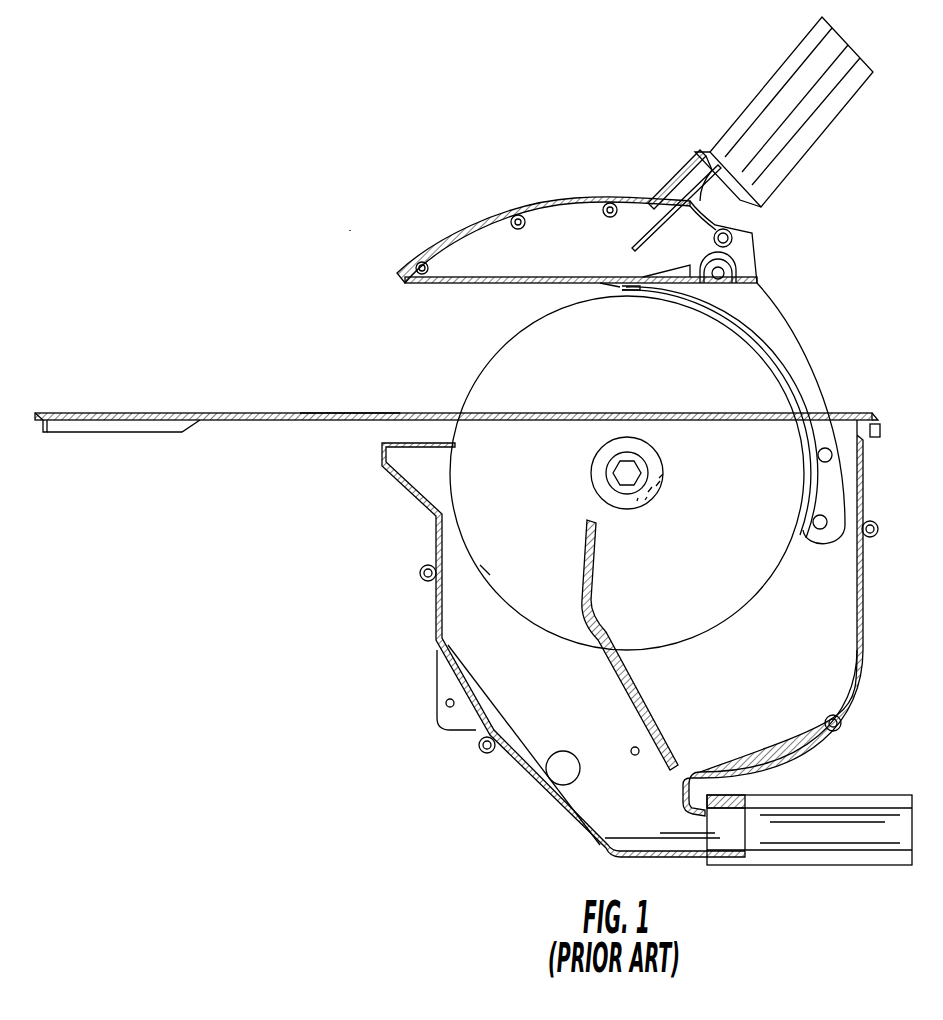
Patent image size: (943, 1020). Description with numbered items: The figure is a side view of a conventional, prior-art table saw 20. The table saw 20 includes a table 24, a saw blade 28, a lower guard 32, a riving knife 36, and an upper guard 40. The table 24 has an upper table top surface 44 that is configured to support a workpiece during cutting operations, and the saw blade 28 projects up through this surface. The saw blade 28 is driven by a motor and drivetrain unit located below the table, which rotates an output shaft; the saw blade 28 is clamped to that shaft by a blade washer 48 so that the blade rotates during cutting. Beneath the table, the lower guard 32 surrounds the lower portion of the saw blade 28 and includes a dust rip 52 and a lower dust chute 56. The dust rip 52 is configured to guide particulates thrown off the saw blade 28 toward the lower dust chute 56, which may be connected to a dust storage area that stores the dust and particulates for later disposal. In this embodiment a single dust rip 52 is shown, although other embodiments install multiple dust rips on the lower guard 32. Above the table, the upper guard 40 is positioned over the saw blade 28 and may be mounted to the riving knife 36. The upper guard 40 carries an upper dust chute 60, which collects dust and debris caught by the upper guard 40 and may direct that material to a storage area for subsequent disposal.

The table saw 20 is at (338, 208).
The table 24 is at (232, 410).
The saw blade 28 is at (488, 509).
The lower guard 32 is at (864, 576).
The riving knife 36 is at (762, 310).
The upper guard 40 is at (570, 215).
The upper table top surface 44 is at (352, 412).
The blade washer 48 is at (627, 473).
The dust rip 52 is at (642, 700).
The lower dust chute 56 is at (783, 810).
The upper dust chute 60 is at (780, 110).